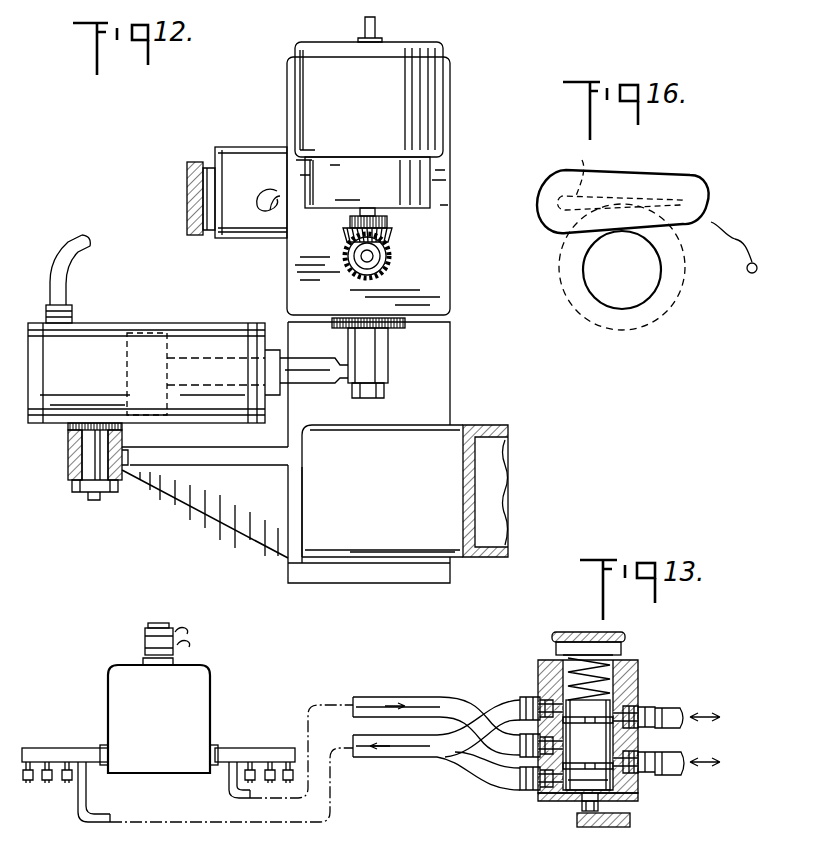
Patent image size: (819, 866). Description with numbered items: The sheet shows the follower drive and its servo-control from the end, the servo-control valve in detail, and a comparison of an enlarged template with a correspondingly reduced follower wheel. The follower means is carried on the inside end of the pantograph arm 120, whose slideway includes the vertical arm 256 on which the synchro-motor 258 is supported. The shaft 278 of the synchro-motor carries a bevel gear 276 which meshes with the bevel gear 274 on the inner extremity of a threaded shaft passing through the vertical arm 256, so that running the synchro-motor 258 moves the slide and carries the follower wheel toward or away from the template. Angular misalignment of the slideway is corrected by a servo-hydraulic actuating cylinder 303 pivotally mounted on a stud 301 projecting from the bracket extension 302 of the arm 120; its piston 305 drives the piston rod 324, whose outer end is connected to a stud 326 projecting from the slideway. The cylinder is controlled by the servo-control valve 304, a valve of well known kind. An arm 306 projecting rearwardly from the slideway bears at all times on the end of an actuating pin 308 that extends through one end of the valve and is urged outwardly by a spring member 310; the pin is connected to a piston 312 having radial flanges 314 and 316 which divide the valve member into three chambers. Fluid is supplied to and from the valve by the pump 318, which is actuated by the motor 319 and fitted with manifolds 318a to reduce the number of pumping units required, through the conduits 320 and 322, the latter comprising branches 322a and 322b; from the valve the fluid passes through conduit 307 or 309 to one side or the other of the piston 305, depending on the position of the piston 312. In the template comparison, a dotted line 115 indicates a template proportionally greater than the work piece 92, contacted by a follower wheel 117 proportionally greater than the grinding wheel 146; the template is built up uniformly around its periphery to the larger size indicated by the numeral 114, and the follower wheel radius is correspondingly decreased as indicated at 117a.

In FIG. 12, the pantograph arm 120 is at (400, 517).
In FIG. 12, the vertical arm 256 is at (452, 88).
In FIG. 12, the synchro-motor 258 is at (378, 97).
In FIG. 12, the bevel gear 274 is at (390, 270).
In FIG. 12, the bevel gear 276 is at (392, 240).
In FIG. 12, the shaft 278 is at (385, 219).
In FIG. 12, the stud 301 is at (92, 457).
In FIG. 12, the bracket extension 302 is at (235, 518).
In FIG. 12, the servo-hydraulic actuating cylinder 303 is at (200, 323).
In FIG. 12, the servo-control valve 304 is at (234, 141).
In FIG. 13, the servo-control valve 304 is at (530, 669).
In FIG. 12, the piston 305 is at (127, 375).
In FIG. 12, the conduit 309 is at (90, 250).
In FIG. 13, the conduit 309 is at (675, 775).
In FIG. 12, the branch 322a is at (275, 182).
In FIG. 13, the branch 322a is at (487, 705).
In FIG. 12, the piston rod 324 is at (318, 353).
In FIG. 12, the stud 326 is at (380, 348).
In FIG. 16, the master template 114 is at (707, 177).
In FIG. 16, the dotted line 115 is at (582, 161).
In FIG. 16, the follower wheel 117 is at (560, 275).
In FIG. 16, the follower wheel of decreased radius 117a is at (608, 298).
In FIG. 16, the work piece 92 is at (758, 254).
In FIG. 16, the grinding wheel 146 is at (750, 274).
In FIG. 13, the pump 318 is at (190, 693).
In FIG. 13, the manifolds 318a is at (268, 752).
In FIG. 13, the motor 319 is at (145, 637).
In FIG. 13, the conduit 320 is at (363, 697).
In FIG. 13, the conduit 322 is at (375, 752).
In FIG. 13, the branch 322b is at (492, 780).
In FIG. 13, the arm 306 is at (608, 830).
In FIG. 13, the conduit 307 is at (683, 712).
In FIG. 13, the actuating pin 308 is at (580, 805).
In FIG. 13, the spring member 310 is at (580, 650).
In FIG. 13, the piston 312 is at (600, 753).
In FIG. 13, the radial flange 314 is at (608, 717).
In FIG. 13, the radial flange 316 is at (600, 802).